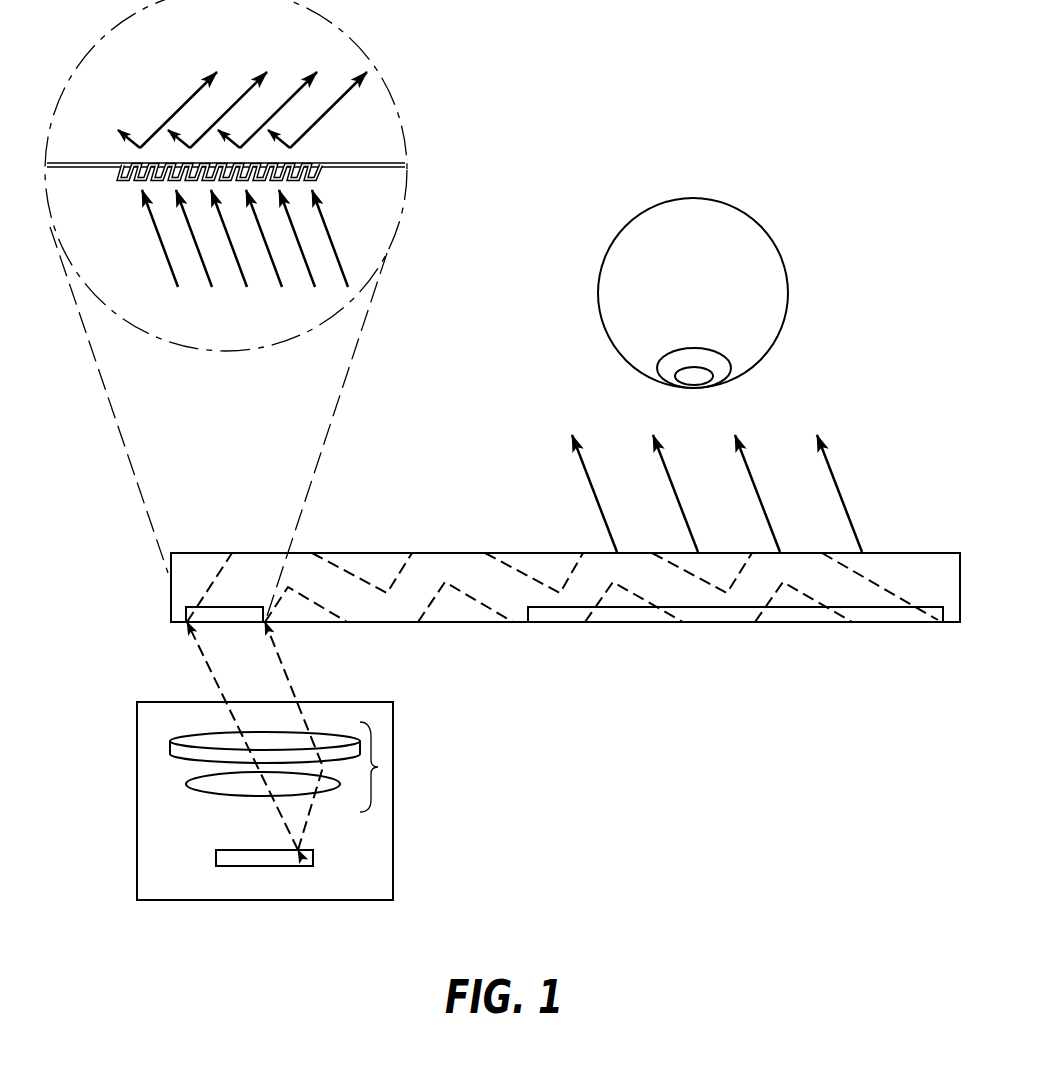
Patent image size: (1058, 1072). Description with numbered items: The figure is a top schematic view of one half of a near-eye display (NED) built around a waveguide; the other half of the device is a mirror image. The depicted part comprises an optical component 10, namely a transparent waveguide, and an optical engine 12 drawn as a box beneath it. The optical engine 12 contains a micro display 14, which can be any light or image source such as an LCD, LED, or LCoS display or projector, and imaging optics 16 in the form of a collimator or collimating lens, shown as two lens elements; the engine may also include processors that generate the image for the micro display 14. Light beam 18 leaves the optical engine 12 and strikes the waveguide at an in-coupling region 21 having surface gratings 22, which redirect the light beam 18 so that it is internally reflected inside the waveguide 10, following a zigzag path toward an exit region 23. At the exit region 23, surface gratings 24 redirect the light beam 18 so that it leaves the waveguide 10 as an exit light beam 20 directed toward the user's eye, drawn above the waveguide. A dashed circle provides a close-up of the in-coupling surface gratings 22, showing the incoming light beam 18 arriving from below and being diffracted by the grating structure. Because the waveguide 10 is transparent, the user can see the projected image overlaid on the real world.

The optical component 10 is at (893, 555).
The optical engine 12 is at (340, 702).
The micro display 14 is at (313, 858).
The imaging optics 16 is at (378, 767).
The light beam 18 is at (158, 242).
The exit light beam 20 is at (840, 492).
The in-coupling region 21 is at (213, 613).
The surface gratings 22 is at (310, 165).
The exit region 23 is at (800, 612).
The surface gratings 24 is at (735, 614).